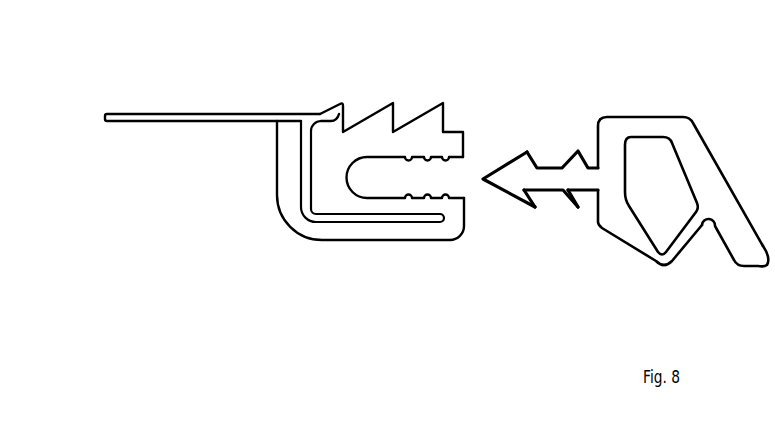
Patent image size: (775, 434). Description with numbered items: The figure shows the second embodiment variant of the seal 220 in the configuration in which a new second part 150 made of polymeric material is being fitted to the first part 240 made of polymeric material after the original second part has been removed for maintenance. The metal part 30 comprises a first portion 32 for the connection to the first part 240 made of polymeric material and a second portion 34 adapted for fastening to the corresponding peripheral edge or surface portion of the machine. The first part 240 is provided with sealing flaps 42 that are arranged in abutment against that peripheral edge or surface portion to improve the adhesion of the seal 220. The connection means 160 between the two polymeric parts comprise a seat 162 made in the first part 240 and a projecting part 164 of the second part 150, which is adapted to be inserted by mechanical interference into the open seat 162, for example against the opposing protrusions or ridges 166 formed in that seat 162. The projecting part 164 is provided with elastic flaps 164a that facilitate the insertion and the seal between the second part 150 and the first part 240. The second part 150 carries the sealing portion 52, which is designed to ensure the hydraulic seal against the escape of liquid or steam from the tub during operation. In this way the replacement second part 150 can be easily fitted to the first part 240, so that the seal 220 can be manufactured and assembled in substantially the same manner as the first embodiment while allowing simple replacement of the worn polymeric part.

The metal part 30 is at (322, 185).
The first portion 32 is at (305, 208).
The second portion 34 is at (203, 114).
The sealing flaps 42 is at (430, 109).
The sealing portion 52 is at (748, 274).
The second part made of polymeric material 150 is at (683, 182).
The connection means 160 is at (525, 249).
The seat 162 is at (453, 177).
The projecting part 164 is at (550, 178).
The elastic flaps 164a is at (522, 202).
The opposing protrusions or ridges 166 is at (452, 155).
The seal 220 is at (322, 198).
The first part made of polymeric material 240 is at (423, 268).